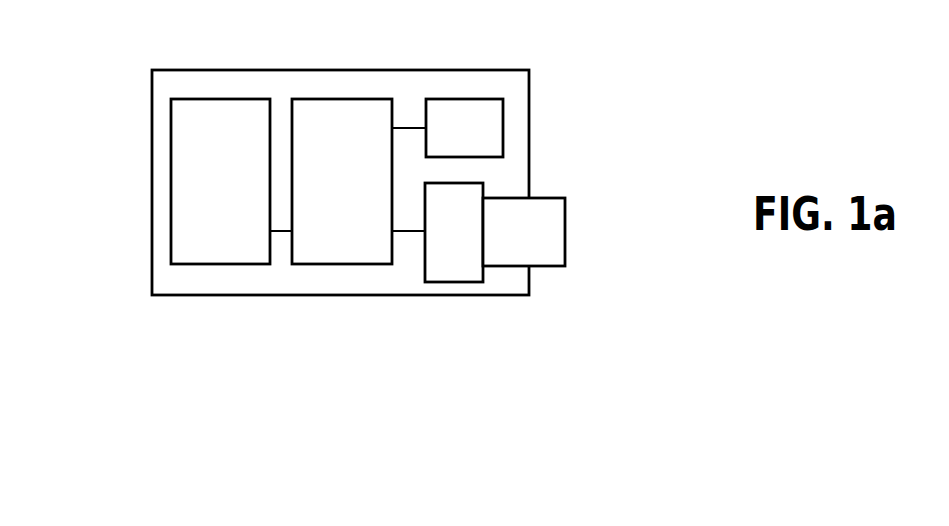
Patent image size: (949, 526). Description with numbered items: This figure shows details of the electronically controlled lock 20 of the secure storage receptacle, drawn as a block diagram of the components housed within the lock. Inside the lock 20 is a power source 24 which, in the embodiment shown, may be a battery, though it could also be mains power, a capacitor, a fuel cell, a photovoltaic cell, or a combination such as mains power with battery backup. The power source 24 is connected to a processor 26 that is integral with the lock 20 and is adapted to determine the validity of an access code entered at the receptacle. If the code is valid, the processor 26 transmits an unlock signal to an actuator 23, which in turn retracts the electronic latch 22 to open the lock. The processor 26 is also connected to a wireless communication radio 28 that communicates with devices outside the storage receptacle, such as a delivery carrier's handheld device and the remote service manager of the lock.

The storage receptacle lock 20 is at (151, 146).
The electronic latch 22 is at (565, 238).
The actuator 23 is at (452, 283).
The power source 24 is at (221, 98).
The processor 26 is at (343, 98).
The wireless communication radio 28 is at (465, 98).